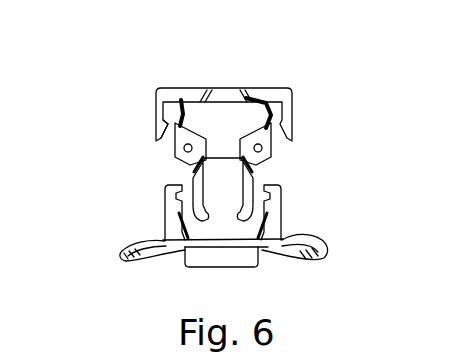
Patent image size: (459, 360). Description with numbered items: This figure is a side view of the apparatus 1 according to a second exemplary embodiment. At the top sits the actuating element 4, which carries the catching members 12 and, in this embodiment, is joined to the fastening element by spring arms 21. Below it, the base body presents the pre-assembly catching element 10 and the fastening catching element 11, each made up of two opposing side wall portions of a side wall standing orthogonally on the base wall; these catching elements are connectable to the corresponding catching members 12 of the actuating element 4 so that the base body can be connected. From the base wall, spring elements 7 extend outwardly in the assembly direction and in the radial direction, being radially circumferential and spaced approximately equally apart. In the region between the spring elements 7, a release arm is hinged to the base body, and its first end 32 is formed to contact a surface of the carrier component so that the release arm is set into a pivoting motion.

The apparatus 1 is at (352, 89).
The actuating element 4 is at (268, 98).
The spring arms 21 is at (181, 100).
The catching members 12 is at (163, 129).
The pre-assembly catching element 10 is at (167, 187).
The fastening catching element 11 is at (168, 198).
The first end of the release arm 32 is at (120, 253).
The spring elements 7 is at (132, 266).